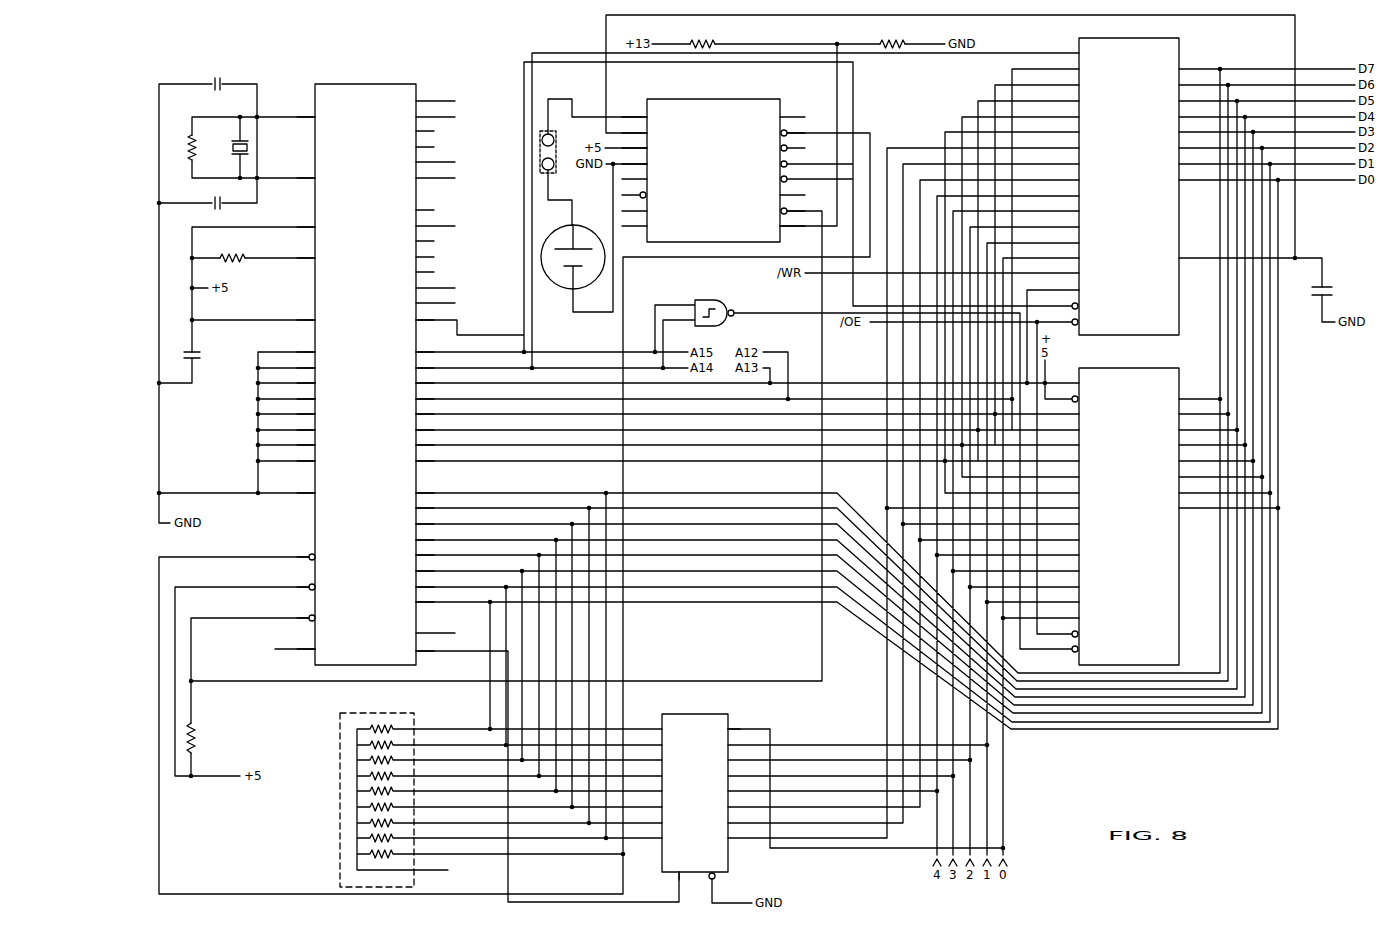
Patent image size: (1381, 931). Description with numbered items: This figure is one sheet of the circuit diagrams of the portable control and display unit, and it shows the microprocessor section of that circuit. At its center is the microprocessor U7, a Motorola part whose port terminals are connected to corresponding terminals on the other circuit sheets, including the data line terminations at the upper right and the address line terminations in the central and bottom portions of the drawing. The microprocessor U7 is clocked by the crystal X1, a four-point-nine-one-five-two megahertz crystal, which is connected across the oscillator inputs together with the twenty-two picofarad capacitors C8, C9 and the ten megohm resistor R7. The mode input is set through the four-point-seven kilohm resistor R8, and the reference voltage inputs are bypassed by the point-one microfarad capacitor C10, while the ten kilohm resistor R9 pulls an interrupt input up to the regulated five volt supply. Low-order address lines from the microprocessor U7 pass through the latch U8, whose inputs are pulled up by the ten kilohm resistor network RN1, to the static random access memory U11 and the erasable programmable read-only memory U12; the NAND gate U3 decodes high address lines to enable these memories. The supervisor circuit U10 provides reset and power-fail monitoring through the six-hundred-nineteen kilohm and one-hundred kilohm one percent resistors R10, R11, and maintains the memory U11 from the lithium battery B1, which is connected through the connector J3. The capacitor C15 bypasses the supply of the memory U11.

The microprocessor U7 is at (372, 358).
The capacitor C8 is at (211, 86).
The capacitor C9 is at (211, 204).
The resistor R7 is at (205, 149).
The crystal X1 is at (266, 147).
The resistor R8 is at (227, 245).
The capacitor C10 is at (205, 354).
The resistor R9 is at (204, 736).
The resistor network RN1 is at (405, 786).
The integrated circuit latch U8 is at (701, 793).
The supervisor integrated circuit U10 is at (713, 154).
The resistor R10 is at (699, 32).
The resistor R11 is at (889, 32).
The connector J3 is at (558, 178).
The lithium battery B1 is at (571, 253).
The NAND gate integrated circuit U3 is at (707, 320).
The static RAM integrated circuit U11 is at (1130, 178).
The EPROM integrated circuit U12 is at (1130, 503).
The capacitor C15 is at (1335, 291).